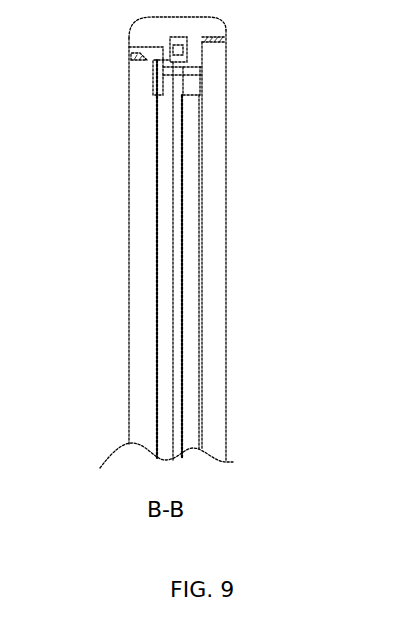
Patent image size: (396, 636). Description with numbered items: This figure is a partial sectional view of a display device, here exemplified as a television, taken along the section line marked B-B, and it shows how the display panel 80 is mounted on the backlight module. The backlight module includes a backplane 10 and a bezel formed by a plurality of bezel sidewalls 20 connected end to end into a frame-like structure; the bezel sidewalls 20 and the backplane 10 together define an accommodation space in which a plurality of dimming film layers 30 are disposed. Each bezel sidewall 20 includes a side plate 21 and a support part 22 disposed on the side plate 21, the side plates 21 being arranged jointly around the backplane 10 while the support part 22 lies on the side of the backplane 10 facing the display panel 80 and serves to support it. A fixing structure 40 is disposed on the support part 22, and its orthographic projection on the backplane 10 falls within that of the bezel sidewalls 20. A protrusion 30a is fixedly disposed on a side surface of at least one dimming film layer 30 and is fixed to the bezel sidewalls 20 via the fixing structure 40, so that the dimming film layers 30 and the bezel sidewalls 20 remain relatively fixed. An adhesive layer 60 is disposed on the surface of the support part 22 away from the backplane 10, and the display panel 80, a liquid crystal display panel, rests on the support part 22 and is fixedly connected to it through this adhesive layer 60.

The backplane 10 is at (213, 348).
The bezel sidewall 20 is at (239, 38).
The side plate 21 is at (220, 23).
The support part 22 is at (220, 56).
The dimming film layer 30 is at (164, 288).
The protrusion 30a is at (158, 52).
The fixing structure 40 is at (222, 75).
The adhesive layer 60 is at (162, 56).
The display panel 80 is at (134, 255).